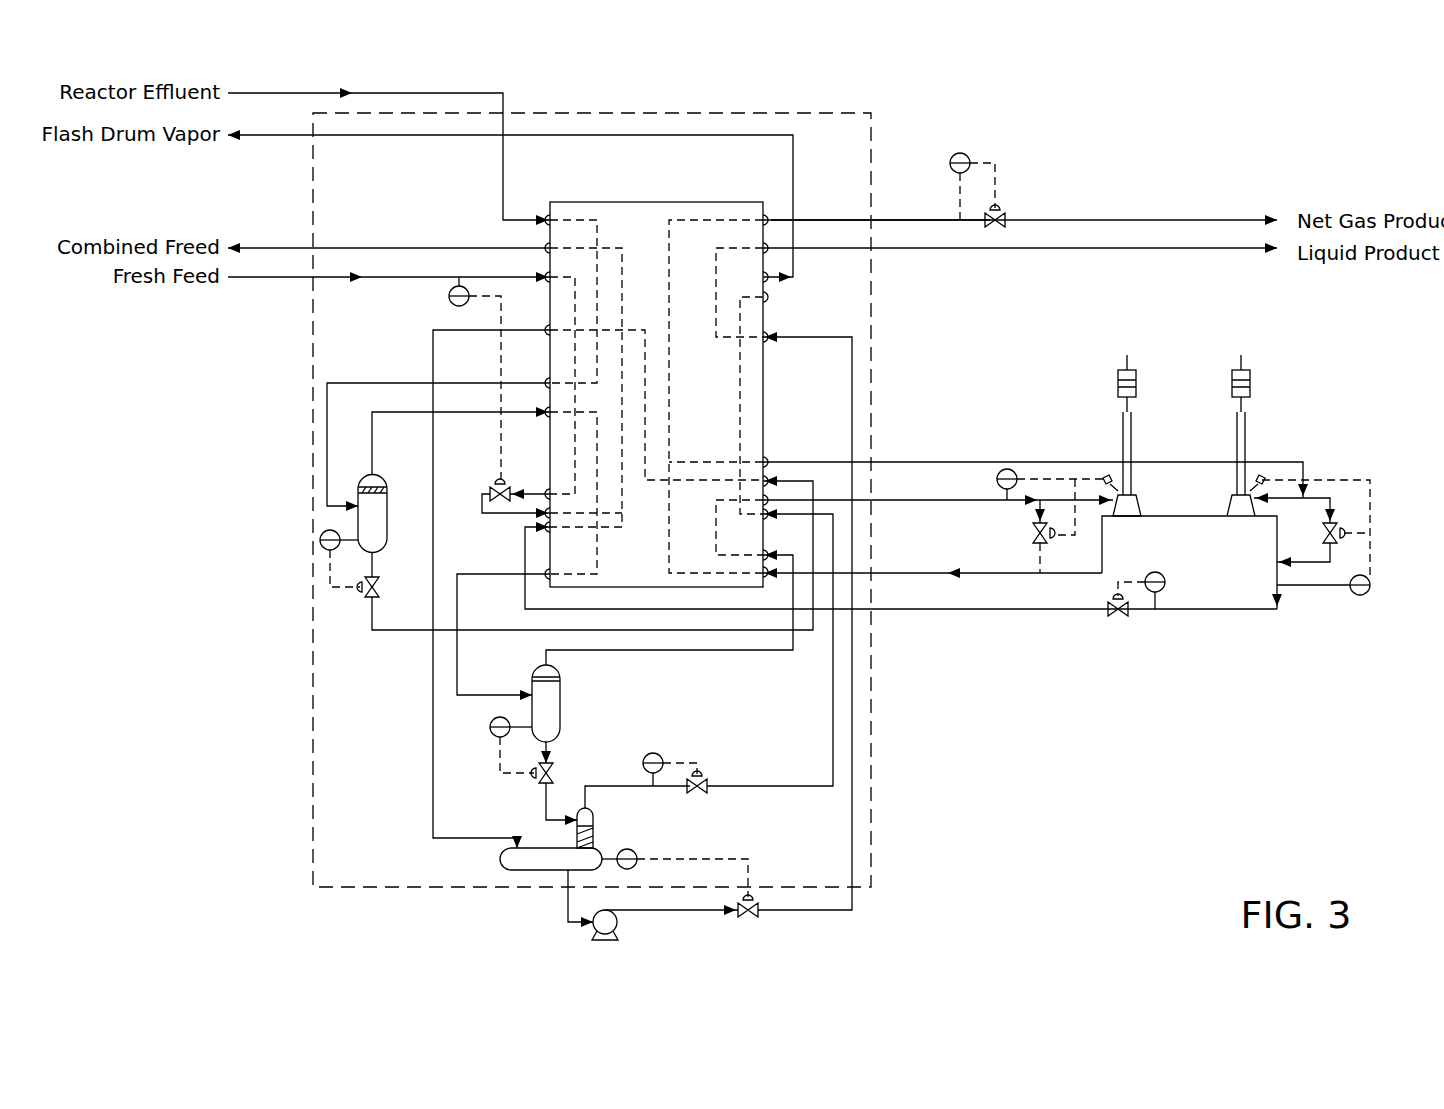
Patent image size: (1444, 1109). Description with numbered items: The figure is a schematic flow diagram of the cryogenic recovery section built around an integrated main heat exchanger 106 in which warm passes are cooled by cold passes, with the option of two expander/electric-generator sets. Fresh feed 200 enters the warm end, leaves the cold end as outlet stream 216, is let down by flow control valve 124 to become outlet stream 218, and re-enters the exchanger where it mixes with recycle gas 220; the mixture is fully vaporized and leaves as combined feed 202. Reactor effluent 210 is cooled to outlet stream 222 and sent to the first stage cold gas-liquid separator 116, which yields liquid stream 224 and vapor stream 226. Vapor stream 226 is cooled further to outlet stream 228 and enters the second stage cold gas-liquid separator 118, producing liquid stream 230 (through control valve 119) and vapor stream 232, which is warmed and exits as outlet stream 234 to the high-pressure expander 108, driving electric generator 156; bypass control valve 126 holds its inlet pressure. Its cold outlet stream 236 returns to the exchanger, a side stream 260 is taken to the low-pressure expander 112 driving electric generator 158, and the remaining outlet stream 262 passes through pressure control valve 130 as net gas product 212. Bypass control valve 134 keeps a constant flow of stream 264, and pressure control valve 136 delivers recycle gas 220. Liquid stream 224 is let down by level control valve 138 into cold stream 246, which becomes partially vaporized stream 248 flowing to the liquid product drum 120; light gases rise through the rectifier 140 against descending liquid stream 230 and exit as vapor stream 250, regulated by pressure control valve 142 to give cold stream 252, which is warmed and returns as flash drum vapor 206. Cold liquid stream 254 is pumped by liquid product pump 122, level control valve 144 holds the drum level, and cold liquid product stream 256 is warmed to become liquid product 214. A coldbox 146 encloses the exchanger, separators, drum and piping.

The integrated main heat exchanger 106 is at (697, 202).
The high-pressure expander 108 is at (1141, 505).
The low-pressure expander 112 is at (1226, 505).
The first stage cold gas-liquid separator 116 is at (387, 520).
The second stage cold gas-liquid separator 118 is at (562, 696).
The control valve 119 is at (556, 776).
The liquid product drum 120 is at (500, 862).
The liquid product pump 122 is at (607, 938).
The flow control valve 124 is at (495, 490).
The bypass control valve 126 is at (1028, 533).
The pressure control valve 130 is at (1000, 210).
The bypass control valve 134 is at (1343, 525).
The pressure control valve 136 is at (1125, 620).
The level control valve 138 is at (366, 600).
The rectifier 140 is at (593, 832).
The pressure control valve 142 is at (703, 792).
The level control valve 144 is at (752, 920).
The coldbox 146 is at (313, 732).
The electric generator 156 is at (1118, 388).
The electric generator 158 is at (1250, 385).
The fresh feed 200 is at (259, 282).
The combined feed 202 is at (264, 247).
The flash drum vapor 206 is at (268, 140).
The reactor effluent 210 is at (268, 92).
The net gas product 212 is at (1218, 220).
The liquid product 214 is at (1220, 258).
The outlet stream 216 is at (530, 494).
The outlet stream 218 is at (492, 520).
The recycle gas 220 is at (1041, 611).
The outlet stream 222 is at (351, 383).
The liquid stream 224 is at (375, 566).
The vapor stream 226 is at (470, 412).
The outlet stream 228 is at (500, 576).
The liquid stream 230 is at (546, 806).
The vapor stream 232 is at (732, 652).
The outlet stream 234 is at (914, 503).
The cold outlet stream 236 is at (1018, 578).
The cold stream 246 is at (408, 633).
The partially vaporized stream 248 is at (433, 770).
The vapor stream 250 is at (602, 788).
The cold stream 252 is at (788, 786).
The cold liquid stream 254 is at (568, 912).
The cold liquid product stream 256 is at (852, 860).
The side stream 260 is at (942, 462).
The outlet stream 262 is at (914, 220).
The stream 264 is at (1217, 611).